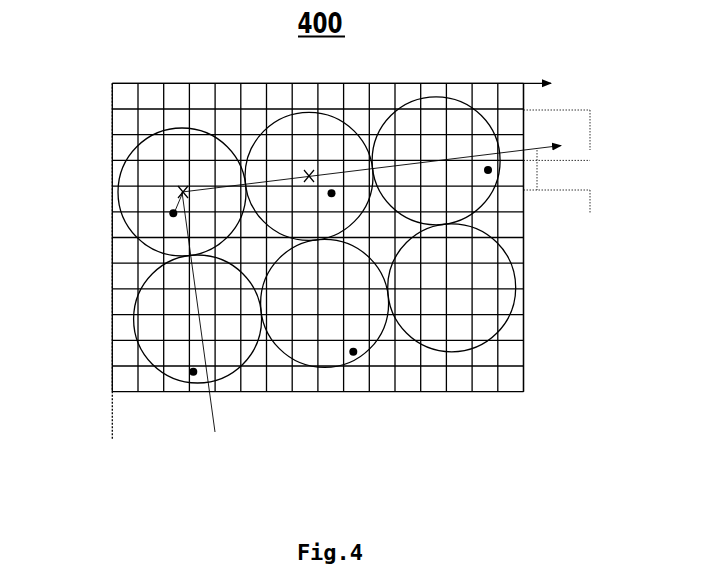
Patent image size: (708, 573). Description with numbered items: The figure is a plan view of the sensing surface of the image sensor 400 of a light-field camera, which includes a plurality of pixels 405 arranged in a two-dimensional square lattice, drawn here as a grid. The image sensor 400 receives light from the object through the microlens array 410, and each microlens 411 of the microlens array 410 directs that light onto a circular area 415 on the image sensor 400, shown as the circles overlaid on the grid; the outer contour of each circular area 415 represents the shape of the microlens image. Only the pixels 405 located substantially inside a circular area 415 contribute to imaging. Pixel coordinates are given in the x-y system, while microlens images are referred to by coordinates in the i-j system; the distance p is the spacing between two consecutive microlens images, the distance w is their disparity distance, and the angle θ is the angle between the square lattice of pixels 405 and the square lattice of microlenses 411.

The image sensor 400 is at (321, 251).
The pixel 405 is at (118, 92).
The microlens array 410 is at (534, 277).
The microlens 411 is at (128, 222).
The circular area 415 is at (143, 188).